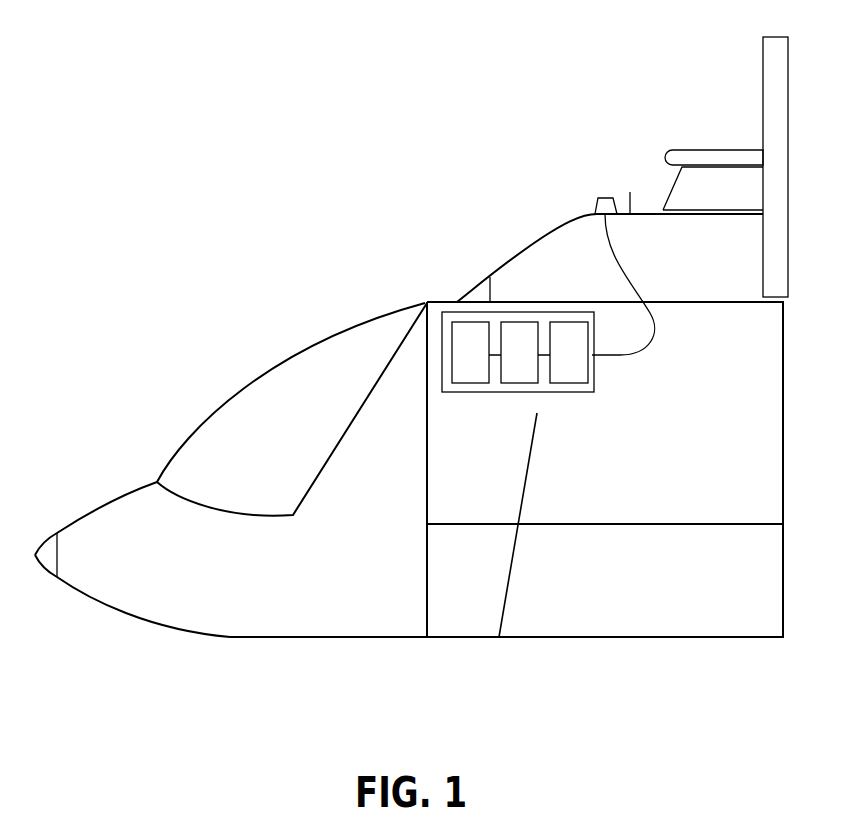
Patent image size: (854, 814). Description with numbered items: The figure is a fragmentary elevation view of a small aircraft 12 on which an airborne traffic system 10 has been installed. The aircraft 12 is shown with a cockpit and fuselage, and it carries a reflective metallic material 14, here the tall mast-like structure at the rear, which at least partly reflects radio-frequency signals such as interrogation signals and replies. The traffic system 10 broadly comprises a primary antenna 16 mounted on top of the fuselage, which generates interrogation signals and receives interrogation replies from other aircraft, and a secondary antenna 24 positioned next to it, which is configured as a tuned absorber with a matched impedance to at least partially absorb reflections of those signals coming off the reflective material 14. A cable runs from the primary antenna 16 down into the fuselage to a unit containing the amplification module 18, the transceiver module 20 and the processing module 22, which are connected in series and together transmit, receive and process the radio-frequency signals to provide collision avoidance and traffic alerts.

The airborne traffic system 10 is at (635, 311).
The aircraft 12 is at (200, 351).
The reflective metallic material 14 is at (770, 67).
The primary antenna 16 is at (583, 202).
The amplification module 18 is at (559, 364).
The transceiver module 20 is at (509, 364).
The processing module 22 is at (460, 364).
The secondary antenna 24 is at (640, 190).